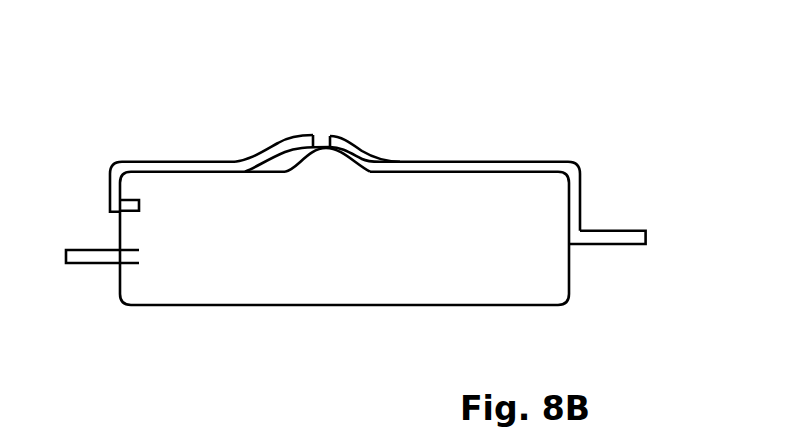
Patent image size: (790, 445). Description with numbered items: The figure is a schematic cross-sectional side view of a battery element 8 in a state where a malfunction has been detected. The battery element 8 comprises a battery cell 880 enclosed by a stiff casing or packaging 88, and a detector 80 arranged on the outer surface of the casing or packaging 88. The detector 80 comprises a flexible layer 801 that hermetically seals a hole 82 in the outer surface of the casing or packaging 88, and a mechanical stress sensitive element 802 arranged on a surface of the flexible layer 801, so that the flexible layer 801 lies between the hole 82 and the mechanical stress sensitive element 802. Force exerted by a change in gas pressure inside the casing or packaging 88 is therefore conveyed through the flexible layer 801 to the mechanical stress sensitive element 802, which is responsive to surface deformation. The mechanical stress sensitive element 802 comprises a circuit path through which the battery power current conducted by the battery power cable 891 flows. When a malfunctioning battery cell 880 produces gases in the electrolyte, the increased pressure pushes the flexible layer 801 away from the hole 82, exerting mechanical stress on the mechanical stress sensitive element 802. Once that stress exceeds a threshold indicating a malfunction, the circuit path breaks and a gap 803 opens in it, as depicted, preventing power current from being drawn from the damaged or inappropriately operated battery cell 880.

The battery element 8 is at (130, 92).
The detector 80 is at (273, 139).
The flexible layer 801 is at (352, 157).
The mechanical stress sensitive element 802 is at (390, 157).
The gap 803 is at (324, 132).
The hole 82 is at (320, 168).
The casing or packaging 88 is at (572, 275).
The battery cell 880 is at (378, 282).
The battery power cable 891 is at (612, 235).